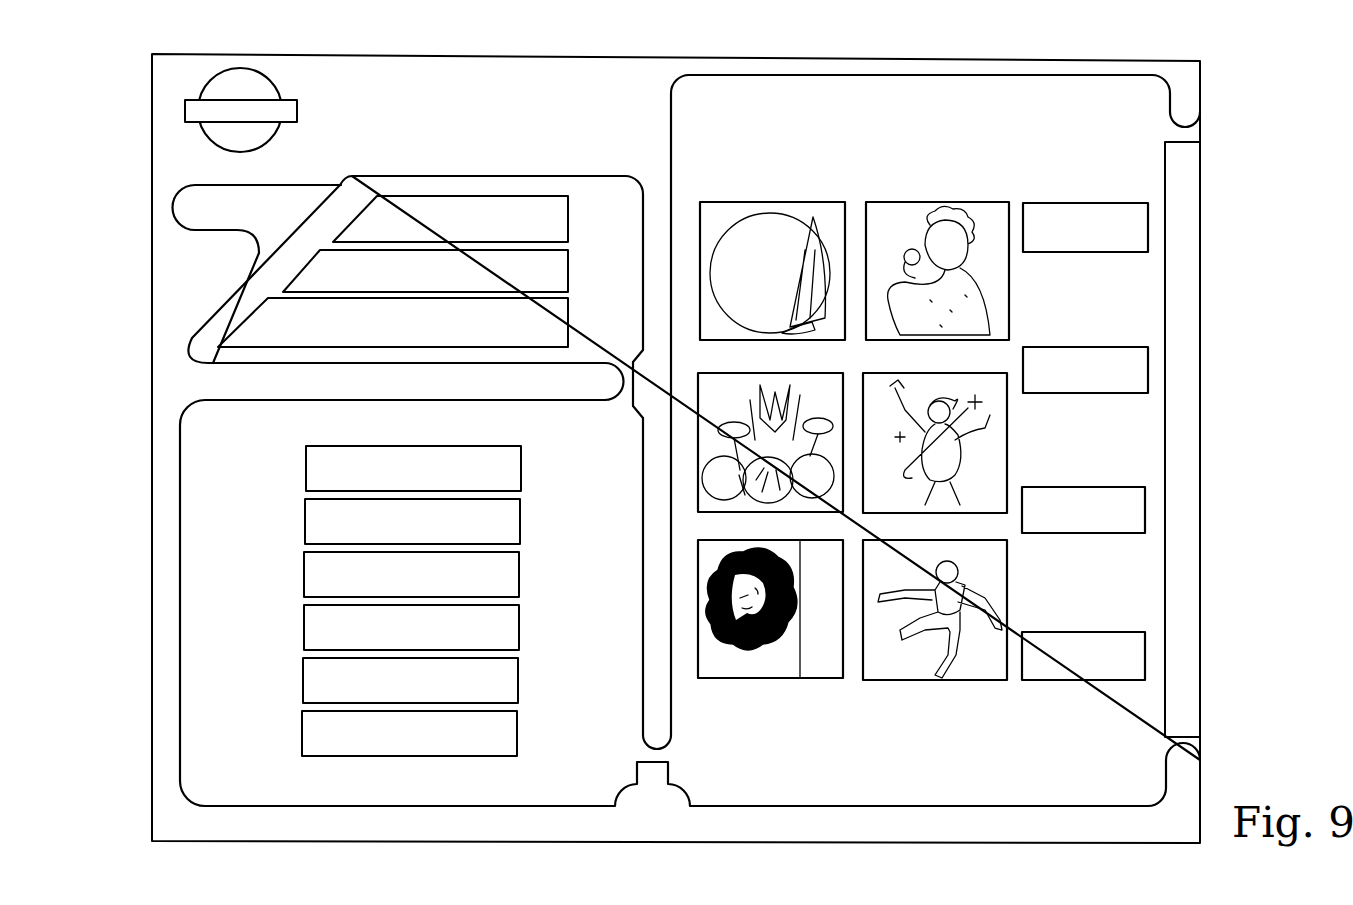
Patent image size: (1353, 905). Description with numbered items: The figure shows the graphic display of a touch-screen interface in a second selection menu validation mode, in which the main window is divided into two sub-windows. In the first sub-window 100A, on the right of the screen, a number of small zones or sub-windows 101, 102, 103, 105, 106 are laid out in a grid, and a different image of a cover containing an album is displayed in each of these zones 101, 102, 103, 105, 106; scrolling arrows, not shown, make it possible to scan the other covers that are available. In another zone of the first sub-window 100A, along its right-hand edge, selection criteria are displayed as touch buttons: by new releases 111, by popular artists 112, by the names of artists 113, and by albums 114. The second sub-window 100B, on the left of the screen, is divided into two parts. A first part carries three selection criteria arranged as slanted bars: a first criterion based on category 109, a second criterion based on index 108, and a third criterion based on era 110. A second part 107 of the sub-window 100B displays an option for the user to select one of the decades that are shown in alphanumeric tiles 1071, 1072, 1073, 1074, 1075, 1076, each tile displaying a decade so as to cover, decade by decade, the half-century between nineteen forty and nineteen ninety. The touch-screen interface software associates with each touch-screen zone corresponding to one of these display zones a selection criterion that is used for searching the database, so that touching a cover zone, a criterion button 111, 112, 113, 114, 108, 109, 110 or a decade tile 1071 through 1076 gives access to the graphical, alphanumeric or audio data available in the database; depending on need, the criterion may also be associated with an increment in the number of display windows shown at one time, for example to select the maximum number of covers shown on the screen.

The first sub-window 100A is at (1130, 100).
The second sub-window 100B is at (452, 160).
The sub-window zone 101 is at (778, 200).
The sub-window zone 102 is at (948, 200).
The sub-window zone 103 is at (796, 378).
The sub-window zone 105 is at (790, 548).
The sub-window zone 106 is at (990, 598).
The second part of the sub-window 107 is at (395, 431).
The index selection criterion 108 is at (554, 226).
The category selection criterion 109 is at (554, 273).
The era selection criterion 110 is at (554, 322).
The new releases selection criterion 111 is at (1148, 222).
The popular artists selection criterion 112 is at (1148, 368).
The artist names selection criterion 113 is at (1145, 510).
The albums selection criterion 114 is at (1145, 657).
The alphanumeric tile 1071 is at (510, 470).
The alphanumeric tile 1072 is at (510, 523).
The alphanumeric tile 1073 is at (510, 576).
The alphanumeric tile 1074 is at (510, 629).
The alphanumeric tile 1075 is at (510, 682).
The alphanumeric tile 1076 is at (510, 735).